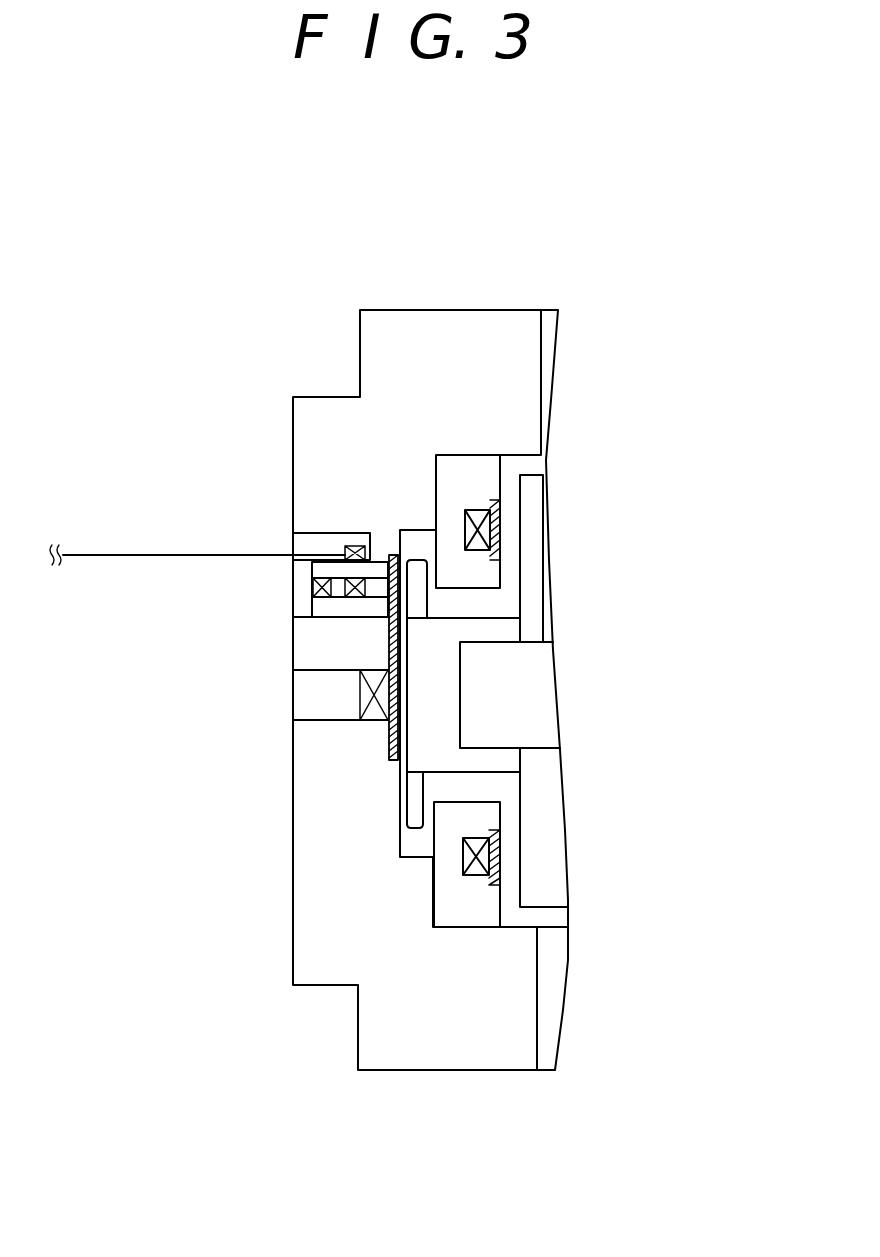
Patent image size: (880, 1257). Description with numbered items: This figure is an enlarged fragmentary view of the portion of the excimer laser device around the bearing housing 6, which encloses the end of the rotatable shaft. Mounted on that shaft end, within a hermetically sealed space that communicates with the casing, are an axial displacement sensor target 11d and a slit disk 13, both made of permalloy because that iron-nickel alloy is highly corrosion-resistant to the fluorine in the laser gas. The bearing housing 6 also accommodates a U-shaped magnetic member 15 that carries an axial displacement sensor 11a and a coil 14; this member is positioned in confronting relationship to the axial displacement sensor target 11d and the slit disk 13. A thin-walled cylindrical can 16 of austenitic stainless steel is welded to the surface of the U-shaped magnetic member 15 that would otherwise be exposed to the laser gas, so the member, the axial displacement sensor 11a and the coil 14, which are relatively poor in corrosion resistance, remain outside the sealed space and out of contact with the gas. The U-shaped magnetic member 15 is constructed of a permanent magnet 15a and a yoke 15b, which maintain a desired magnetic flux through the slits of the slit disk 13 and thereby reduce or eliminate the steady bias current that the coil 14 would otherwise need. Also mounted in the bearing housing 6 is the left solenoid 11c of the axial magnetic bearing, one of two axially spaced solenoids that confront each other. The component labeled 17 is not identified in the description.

The bearing housing 6 is at (340, 373).
The axial displacement sensor 11a is at (362, 695).
The left solenoid 11c is at (475, 913).
The axial displacement sensor target 11d is at (420, 750).
The slit disk 13 is at (413, 810).
The coil 14 is at (345, 552).
The U-shaped magnetic member 15 is at (120, 572).
The permanent magnet 15a is at (310, 610).
The yoke 15b is at (315, 572).
The thin-walled cylindrical can 16 is at (389, 750).
The coil 17 is at (497, 525).